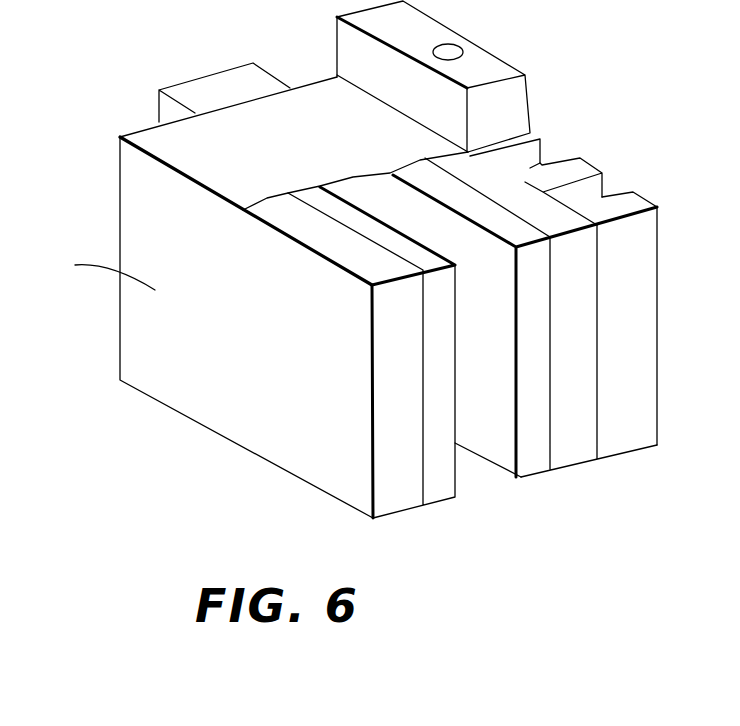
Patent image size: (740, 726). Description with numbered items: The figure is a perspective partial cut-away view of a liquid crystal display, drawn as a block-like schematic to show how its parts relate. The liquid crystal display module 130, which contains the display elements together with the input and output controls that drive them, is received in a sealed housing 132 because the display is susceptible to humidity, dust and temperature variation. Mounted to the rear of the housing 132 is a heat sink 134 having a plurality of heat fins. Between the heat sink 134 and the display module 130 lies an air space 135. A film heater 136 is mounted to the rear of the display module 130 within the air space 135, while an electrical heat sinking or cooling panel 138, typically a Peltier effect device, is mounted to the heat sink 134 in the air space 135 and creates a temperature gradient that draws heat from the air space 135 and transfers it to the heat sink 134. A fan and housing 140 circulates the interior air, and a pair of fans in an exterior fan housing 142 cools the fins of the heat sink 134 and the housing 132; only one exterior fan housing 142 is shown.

The liquid crystal display module 130 is at (199, 406).
The sealed housing 132 is at (165, 130).
The heat sink 134 is at (518, 200).
The air space 135 is at (494, 484).
The film heater 136 is at (448, 472).
The electrical heat sinking or cooling panel 138 is at (543, 447).
The fan and housing 140 is at (233, 82).
The exterior fan housing 142 is at (485, 65).